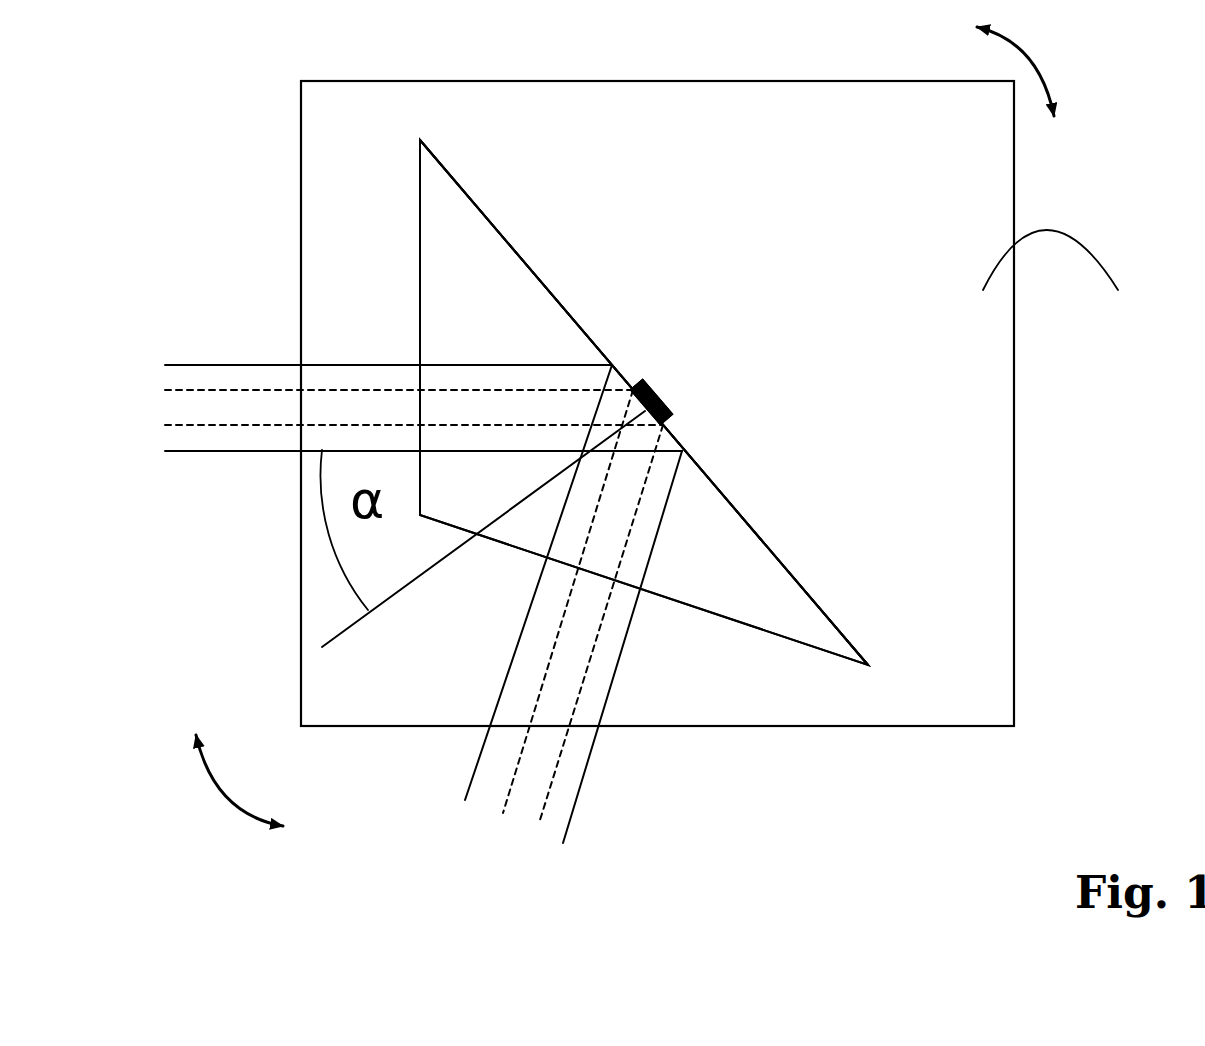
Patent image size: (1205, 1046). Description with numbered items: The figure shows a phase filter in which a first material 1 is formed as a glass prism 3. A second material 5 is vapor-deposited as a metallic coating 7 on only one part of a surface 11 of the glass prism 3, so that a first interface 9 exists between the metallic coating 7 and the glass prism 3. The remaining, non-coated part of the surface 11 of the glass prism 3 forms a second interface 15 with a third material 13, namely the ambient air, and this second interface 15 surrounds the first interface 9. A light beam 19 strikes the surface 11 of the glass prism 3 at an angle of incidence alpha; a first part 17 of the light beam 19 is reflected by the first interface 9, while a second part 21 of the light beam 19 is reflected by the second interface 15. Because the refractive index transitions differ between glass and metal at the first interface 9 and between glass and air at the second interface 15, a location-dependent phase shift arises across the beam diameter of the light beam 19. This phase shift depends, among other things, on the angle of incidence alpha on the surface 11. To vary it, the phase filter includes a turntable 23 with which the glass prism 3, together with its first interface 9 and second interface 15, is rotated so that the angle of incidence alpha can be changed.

The first material 1 is at (383, 298).
The glass prism 3 is at (495, 290).
The second material 5 is at (680, 404).
The metallic coating 7 is at (655, 395).
The first interface 9 is at (665, 425).
The surface 11 is at (493, 176).
The third material 13 is at (828, 271).
The second interface 15 is at (565, 305).
The first part of the light beam 17 is at (533, 772).
The light beam 19 is at (211, 326).
The second part of the light beam 21 is at (598, 677).
The turntable 23 is at (1069, 288).